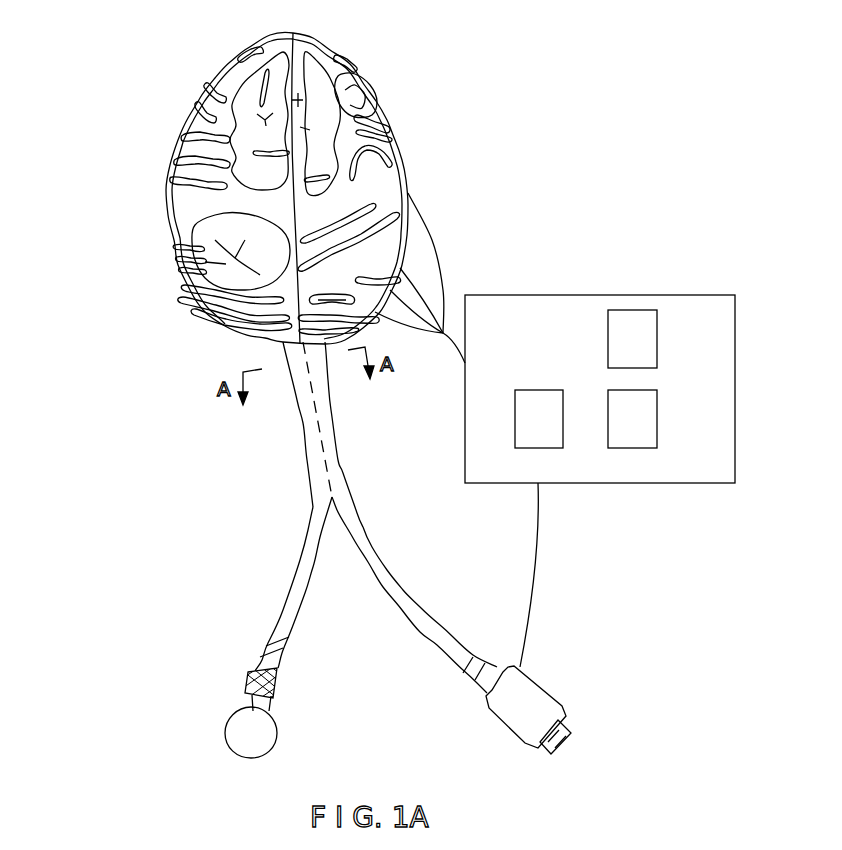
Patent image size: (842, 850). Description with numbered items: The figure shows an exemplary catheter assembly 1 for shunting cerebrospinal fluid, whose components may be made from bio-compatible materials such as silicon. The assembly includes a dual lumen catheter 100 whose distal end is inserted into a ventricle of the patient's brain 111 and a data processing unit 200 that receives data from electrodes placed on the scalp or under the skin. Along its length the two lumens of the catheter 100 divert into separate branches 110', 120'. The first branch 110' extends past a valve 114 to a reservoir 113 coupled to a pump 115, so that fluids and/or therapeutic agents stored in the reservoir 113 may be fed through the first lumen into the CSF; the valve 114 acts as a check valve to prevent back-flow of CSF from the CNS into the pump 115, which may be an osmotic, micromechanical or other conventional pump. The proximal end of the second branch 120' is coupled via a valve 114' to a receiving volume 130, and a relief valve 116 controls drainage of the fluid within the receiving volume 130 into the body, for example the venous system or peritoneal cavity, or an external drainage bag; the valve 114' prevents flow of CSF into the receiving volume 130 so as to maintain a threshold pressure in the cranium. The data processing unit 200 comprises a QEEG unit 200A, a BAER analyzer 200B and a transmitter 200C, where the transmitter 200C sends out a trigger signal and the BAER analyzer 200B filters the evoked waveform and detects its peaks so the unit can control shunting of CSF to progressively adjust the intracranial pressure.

The catheter assembly 1 is at (170, 445).
The brain 111 is at (278, 345).
The dual lumen catheter 100 is at (308, 428).
The branch 110' is at (268, 584).
The valve 114 is at (229, 639).
The pump 115 is at (243, 673).
The reservoir 113 is at (233, 730).
The branch 120' is at (414, 595).
The valve 114' is at (438, 699).
The receiving volume 130 is at (523, 693).
The relief valve 116 is at (560, 743).
The data processing unit 200 is at (552, 305).
The QEEG unit 200A is at (645, 420).
The BAER analyzer 200B is at (645, 340).
The transmitter 200C is at (538, 400).